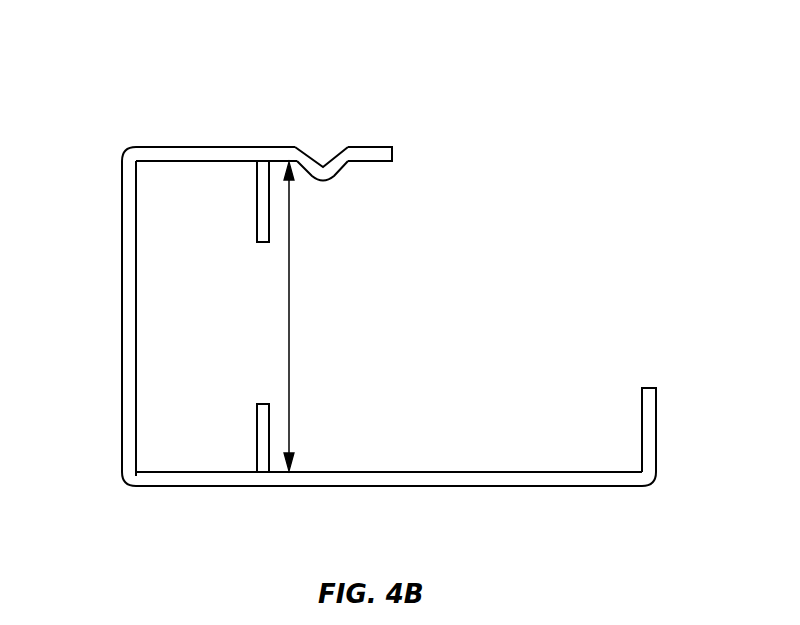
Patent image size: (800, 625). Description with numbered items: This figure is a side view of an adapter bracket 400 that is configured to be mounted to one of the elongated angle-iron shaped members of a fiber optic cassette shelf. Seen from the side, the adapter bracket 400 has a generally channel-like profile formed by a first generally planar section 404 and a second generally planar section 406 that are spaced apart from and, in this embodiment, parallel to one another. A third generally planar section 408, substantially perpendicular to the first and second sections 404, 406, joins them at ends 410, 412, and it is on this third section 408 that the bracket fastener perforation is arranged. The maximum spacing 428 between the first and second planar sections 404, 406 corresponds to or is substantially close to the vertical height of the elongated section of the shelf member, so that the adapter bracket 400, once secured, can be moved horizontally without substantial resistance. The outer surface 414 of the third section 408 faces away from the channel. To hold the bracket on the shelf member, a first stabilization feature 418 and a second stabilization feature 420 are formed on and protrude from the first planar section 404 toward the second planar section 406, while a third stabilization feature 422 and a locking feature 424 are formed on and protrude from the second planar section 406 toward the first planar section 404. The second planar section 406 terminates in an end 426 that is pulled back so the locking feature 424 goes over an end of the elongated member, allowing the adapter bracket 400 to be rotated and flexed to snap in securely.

The adapter bracket 400 is at (452, 83).
The first generally planar section 404 is at (210, 487).
The second generally planar section 406 is at (193, 147).
The third generally planar section 408 is at (122, 255).
The end 410 is at (127, 484).
The end 412 is at (121, 157).
The outer surface 414 is at (120, 333).
The first stabilization feature 418 is at (263, 433).
The second stabilization feature 420 is at (670, 428).
The third stabilization feature 422 is at (265, 217).
The locking feature 424 is at (324, 165).
The end 426 is at (400, 148).
The maximum spacing 428 is at (321, 316).